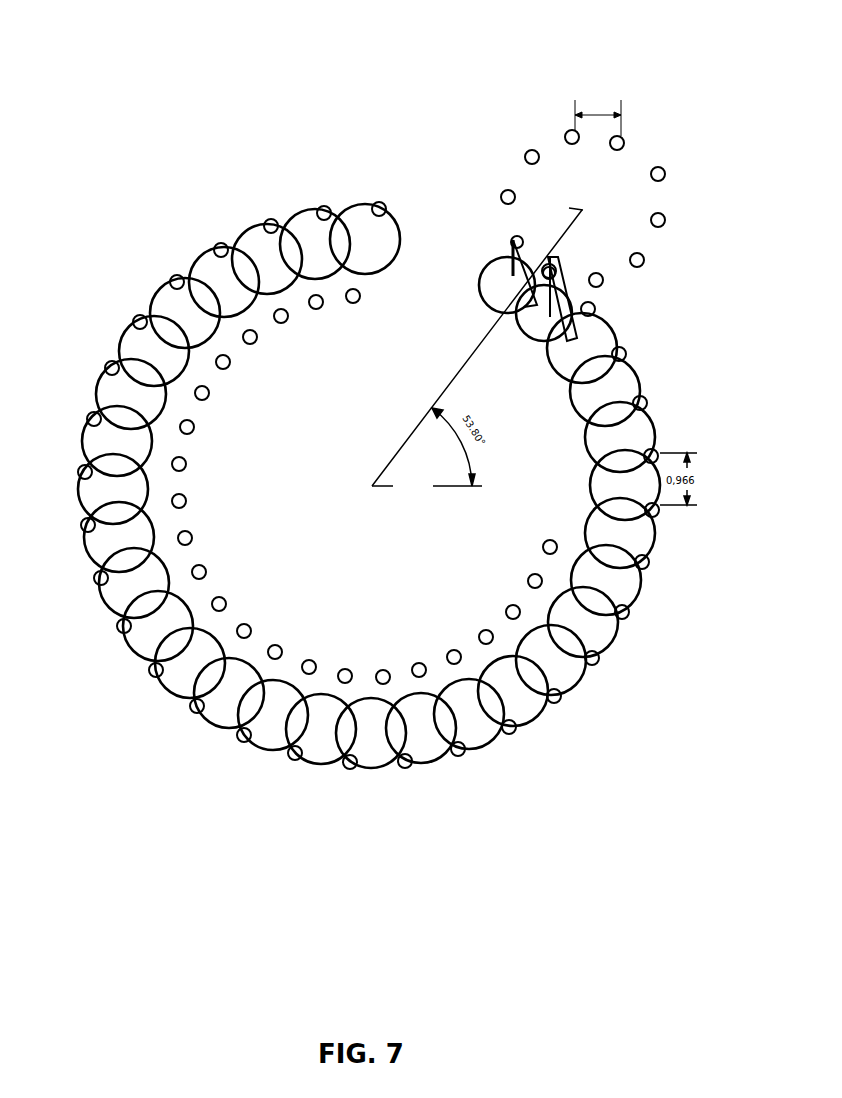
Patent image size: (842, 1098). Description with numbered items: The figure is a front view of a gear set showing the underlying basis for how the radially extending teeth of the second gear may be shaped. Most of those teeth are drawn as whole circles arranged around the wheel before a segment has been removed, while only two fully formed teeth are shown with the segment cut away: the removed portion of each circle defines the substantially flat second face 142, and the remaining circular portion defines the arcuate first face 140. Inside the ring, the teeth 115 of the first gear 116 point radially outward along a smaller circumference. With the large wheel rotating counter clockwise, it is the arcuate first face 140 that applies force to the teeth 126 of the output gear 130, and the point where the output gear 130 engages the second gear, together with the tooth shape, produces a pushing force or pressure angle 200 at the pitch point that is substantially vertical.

The teeth of the first gear 115 is at (218, 360).
The first gear 116 is at (321, 427).
The teeth of the output gear 126 is at (665, 174).
The output gear 130 is at (638, 153).
The first face of the tooth 140 is at (494, 256).
The second face of the tooth 142 is at (567, 306).
The pressure angle 200 is at (512, 240).